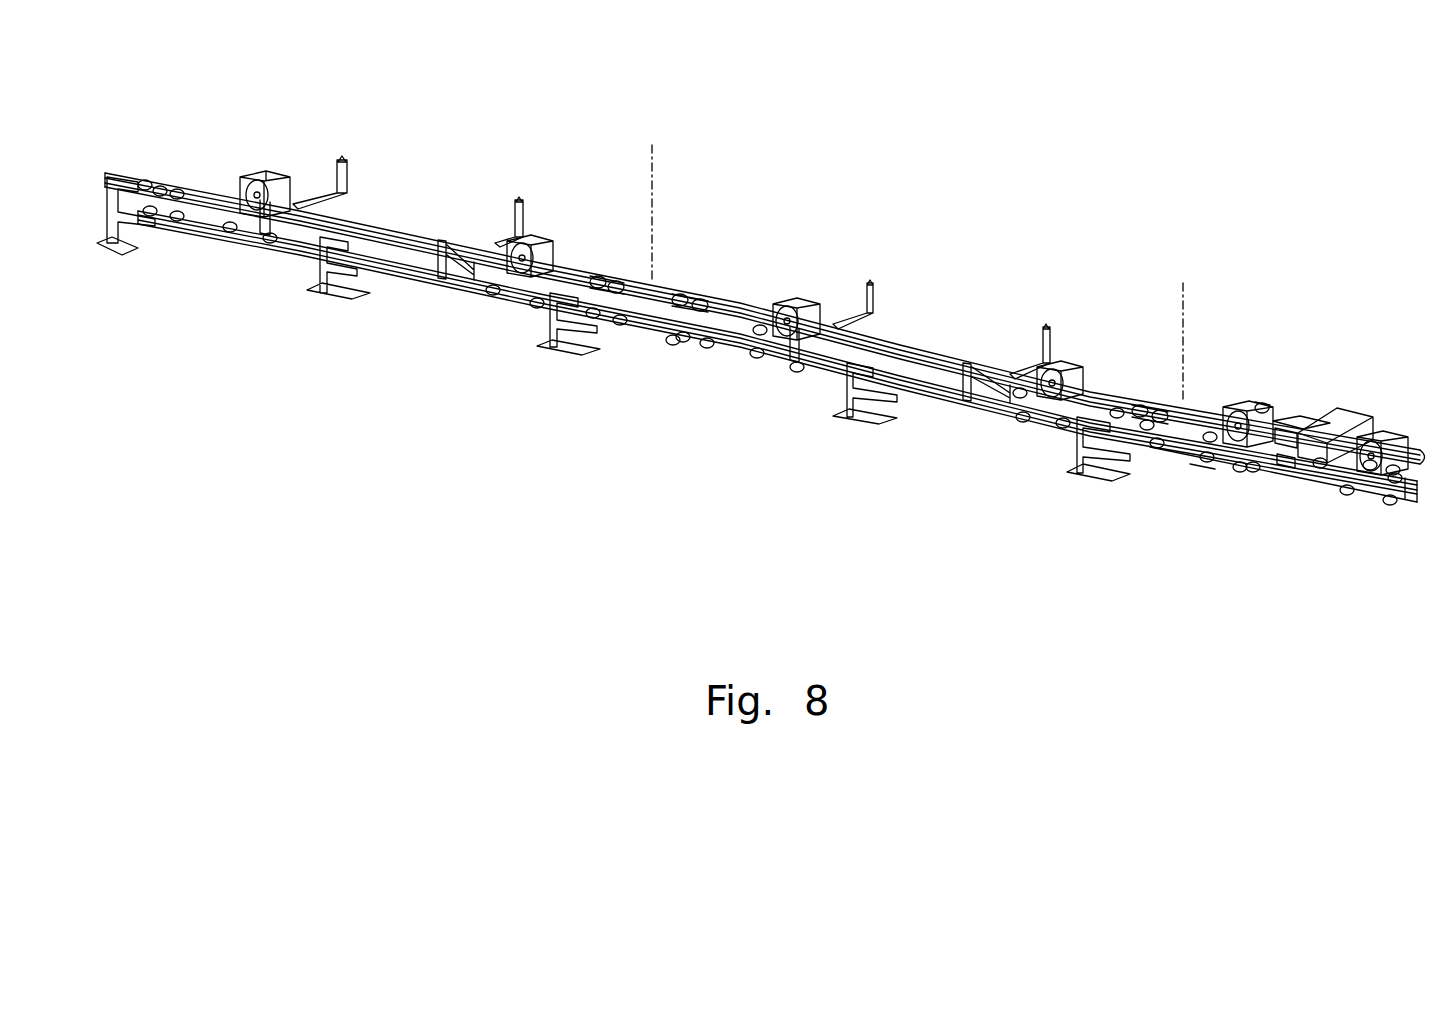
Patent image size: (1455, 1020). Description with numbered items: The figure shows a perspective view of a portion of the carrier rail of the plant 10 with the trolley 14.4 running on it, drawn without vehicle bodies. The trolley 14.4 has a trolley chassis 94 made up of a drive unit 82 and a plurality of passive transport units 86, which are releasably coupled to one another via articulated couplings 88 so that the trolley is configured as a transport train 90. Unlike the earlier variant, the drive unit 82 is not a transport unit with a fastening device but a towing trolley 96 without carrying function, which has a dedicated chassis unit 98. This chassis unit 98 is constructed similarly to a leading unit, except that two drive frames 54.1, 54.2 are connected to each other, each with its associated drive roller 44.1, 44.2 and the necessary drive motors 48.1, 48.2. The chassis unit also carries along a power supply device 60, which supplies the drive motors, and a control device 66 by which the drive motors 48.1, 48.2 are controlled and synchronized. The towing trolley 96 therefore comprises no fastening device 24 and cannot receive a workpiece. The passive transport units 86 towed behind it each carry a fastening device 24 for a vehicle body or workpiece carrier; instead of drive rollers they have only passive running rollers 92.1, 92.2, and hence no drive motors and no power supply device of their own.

The plant for the transportation of workpieces 10 is at (1208, 96).
The trolley 14.4 is at (903, 155).
The fastening device 24 is at (406, 230).
The drive roller 44.1 is at (1370, 469).
The drive roller 44.2 is at (1240, 472).
The drive motor 48.1 is at (1395, 480).
The drive motor 48.2 is at (1265, 402).
The drive frame 54.1 is at (1380, 423).
The drive frame 54.2 is at (1247, 403).
The power supply device 60 is at (1351, 409).
The control device 66 is at (1297, 412).
The drive unit 82 is at (1196, 475).
The passive transport units 86 is at (418, 241).
The articulated couplings 88 is at (660, 290).
The transport train 90 is at (1029, 169).
The passive running roller 92.1 is at (528, 240).
The passive running roller 92.2 is at (262, 186).
The trolley chassis 94 is at (1094, 314).
The towing trolley 96 is at (1312, 412).
The chassis unit 98 is at (1285, 468).